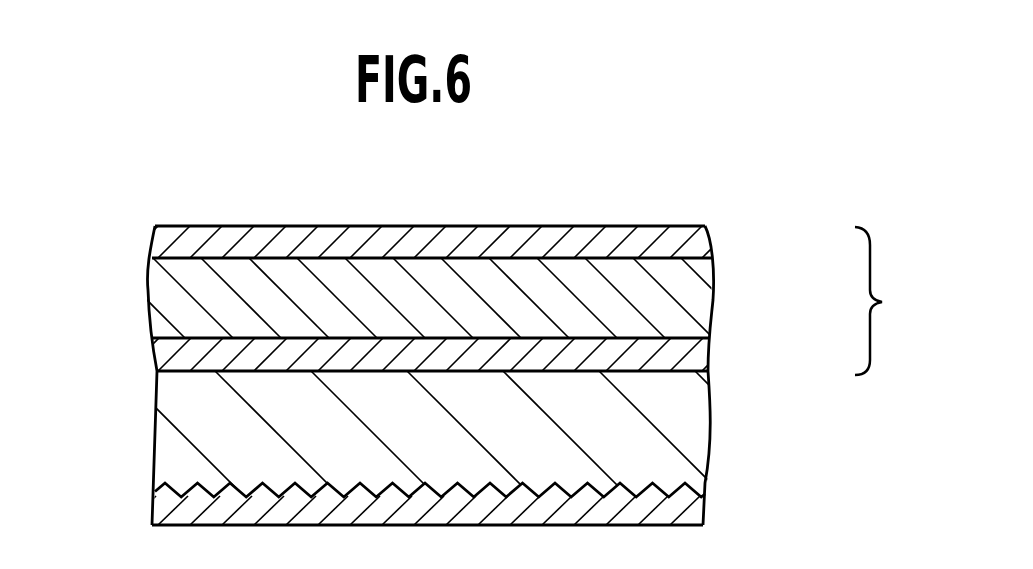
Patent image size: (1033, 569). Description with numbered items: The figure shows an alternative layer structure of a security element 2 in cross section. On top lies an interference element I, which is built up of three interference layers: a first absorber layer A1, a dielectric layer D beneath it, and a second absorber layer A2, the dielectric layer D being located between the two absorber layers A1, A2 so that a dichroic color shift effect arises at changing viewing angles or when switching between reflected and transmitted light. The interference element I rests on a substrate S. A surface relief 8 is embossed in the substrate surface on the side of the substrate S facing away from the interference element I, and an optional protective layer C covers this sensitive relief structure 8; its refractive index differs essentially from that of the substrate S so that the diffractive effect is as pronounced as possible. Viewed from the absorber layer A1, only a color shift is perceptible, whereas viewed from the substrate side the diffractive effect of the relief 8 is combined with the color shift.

The security element 2 is at (140, 224).
The surface relief 8 is at (216, 486).
The absorber layer A1 is at (707, 242).
The dielectric layer D is at (685, 300).
The absorber layer A2 is at (693, 358).
The substrate S is at (680, 435).
The protective layer C is at (688, 513).
The interference element I is at (889, 288).